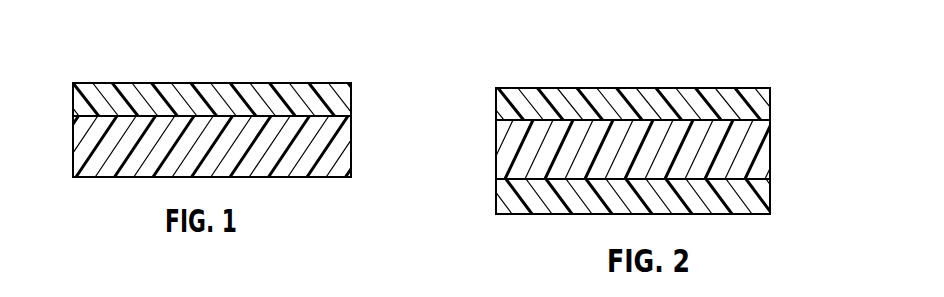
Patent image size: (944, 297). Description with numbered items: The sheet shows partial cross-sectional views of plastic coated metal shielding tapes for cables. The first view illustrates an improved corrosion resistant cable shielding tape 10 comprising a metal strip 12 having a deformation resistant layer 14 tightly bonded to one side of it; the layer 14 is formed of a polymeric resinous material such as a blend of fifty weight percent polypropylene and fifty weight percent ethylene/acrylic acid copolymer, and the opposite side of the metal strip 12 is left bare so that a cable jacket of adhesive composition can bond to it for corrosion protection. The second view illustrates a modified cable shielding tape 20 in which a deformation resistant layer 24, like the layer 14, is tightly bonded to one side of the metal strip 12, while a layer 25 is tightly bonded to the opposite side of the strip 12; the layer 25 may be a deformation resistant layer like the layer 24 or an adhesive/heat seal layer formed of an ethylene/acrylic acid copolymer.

In FIG. 1, the cable shielding tape 10 is at (212, 103).
In FIG. 1, the metal strip 12 is at (340, 149).
In FIG. 2, the metal strip 12 is at (762, 153).
In FIG. 1, the deformation resistant layer 14 is at (336, 103).
In FIG. 2, the modified cable shielding tape 20 is at (641, 125).
In FIG. 2, the deformation resistant layer 24 is at (758, 108).
In FIG. 2, the layer 25 is at (762, 196).